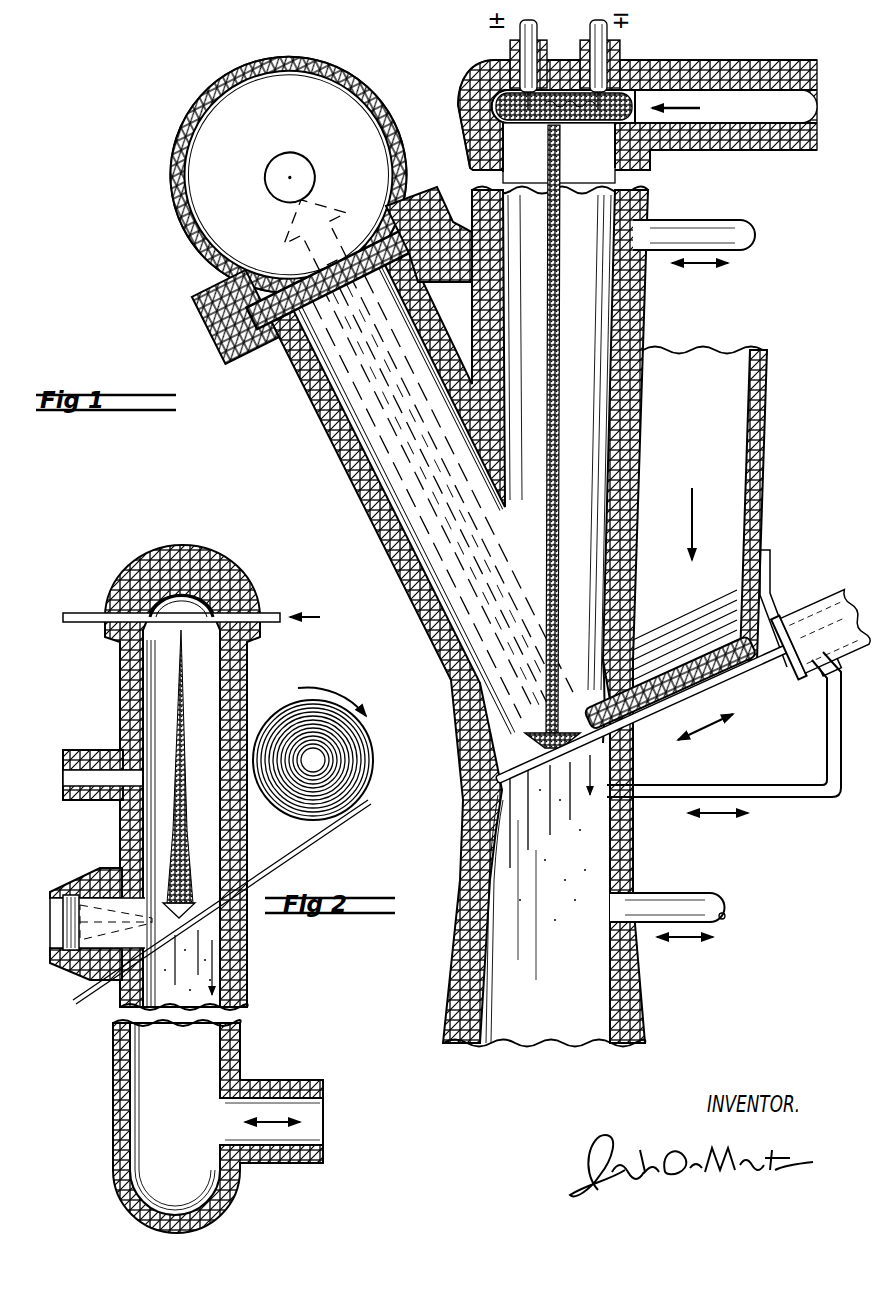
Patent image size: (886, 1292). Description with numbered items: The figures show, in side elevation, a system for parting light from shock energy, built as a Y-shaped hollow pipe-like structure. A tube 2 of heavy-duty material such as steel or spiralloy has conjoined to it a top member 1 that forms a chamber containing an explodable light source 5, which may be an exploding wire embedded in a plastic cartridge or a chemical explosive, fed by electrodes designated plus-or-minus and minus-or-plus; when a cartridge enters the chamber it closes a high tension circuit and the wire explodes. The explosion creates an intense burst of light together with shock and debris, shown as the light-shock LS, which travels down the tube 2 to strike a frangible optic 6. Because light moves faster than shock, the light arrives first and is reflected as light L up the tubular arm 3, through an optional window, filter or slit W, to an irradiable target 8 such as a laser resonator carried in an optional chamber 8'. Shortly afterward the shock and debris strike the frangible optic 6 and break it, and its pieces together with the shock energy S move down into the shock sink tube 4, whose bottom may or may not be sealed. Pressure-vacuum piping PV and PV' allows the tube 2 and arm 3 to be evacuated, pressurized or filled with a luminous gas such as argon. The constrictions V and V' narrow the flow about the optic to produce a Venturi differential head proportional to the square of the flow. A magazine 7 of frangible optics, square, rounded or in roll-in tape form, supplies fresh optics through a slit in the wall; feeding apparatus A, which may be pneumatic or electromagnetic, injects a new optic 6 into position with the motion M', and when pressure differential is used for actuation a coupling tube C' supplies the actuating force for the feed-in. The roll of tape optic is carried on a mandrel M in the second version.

In FIG. 1, the top member 1 is at (482, 62).
In FIG. 2, the top member 1 is at (222, 572).
In FIG. 1, the tube 2 is at (470, 158).
In FIG. 2, the tube 2 is at (245, 680).
In FIG. 1, the tubular arm 3 is at (352, 476).
In FIG. 2, the tubular arm 3 is at (115, 872).
In FIG. 1, the shock sink tube 4 is at (472, 868).
In FIG. 2, the shock sink tube 4 is at (117, 1095).
In FIG. 1, the explodable light source 5 is at (623, 92).
In FIG. 2, the explodable light source 5 is at (100, 621).
In FIG. 1, the frangible optic 6 is at (500, 766).
In FIG. 2, the frangible optic 6 is at (195, 930).
In FIG. 1, the magazine of frangible optics 7 is at (715, 534).
In FIG. 2, the magazine of frangible optics 7 is at (360, 735).
In FIG. 1, the irradiable target 8 is at (271, 174).
In FIG. 2, the irradiable target 8 is at (53, 897).
In FIG. 1, the chamber 8' is at (288, 174).
In FIG. 1, the window W is at (262, 365).
In FIG. 2, the window W is at (62, 962).
In FIG. 1, the light L is at (410, 437).
In FIG. 2, the light L is at (120, 925).
In FIG. 1, the light-shock LS is at (562, 408).
In FIG. 2, the light-shock LS is at (185, 762).
In FIG. 1, the pressure-vacuum piping PV is at (704, 227).
In FIG. 2, the pressure-vacuum piping PV is at (87, 756).
In FIG. 1, the pressure-vacuum piping PV' is at (667, 893).
In FIG. 2, the pressure-vacuum piping PV' is at (272, 1088).
In FIG. 1, the constriction V is at (607, 734).
In FIG. 1, the constriction V' is at (670, 707).
In FIG. 2, the mandrel M is at (361, 774).
In FIG. 1, the motion of fresh optic M' is at (729, 712).
In FIG. 1, the feeding apparatus A is at (810, 612).
In FIG. 1, the coupling tube C' is at (724, 732).
In FIG. 1, the shock energy S is at (557, 830).
In FIG. 2, the shock energy S is at (172, 1180).